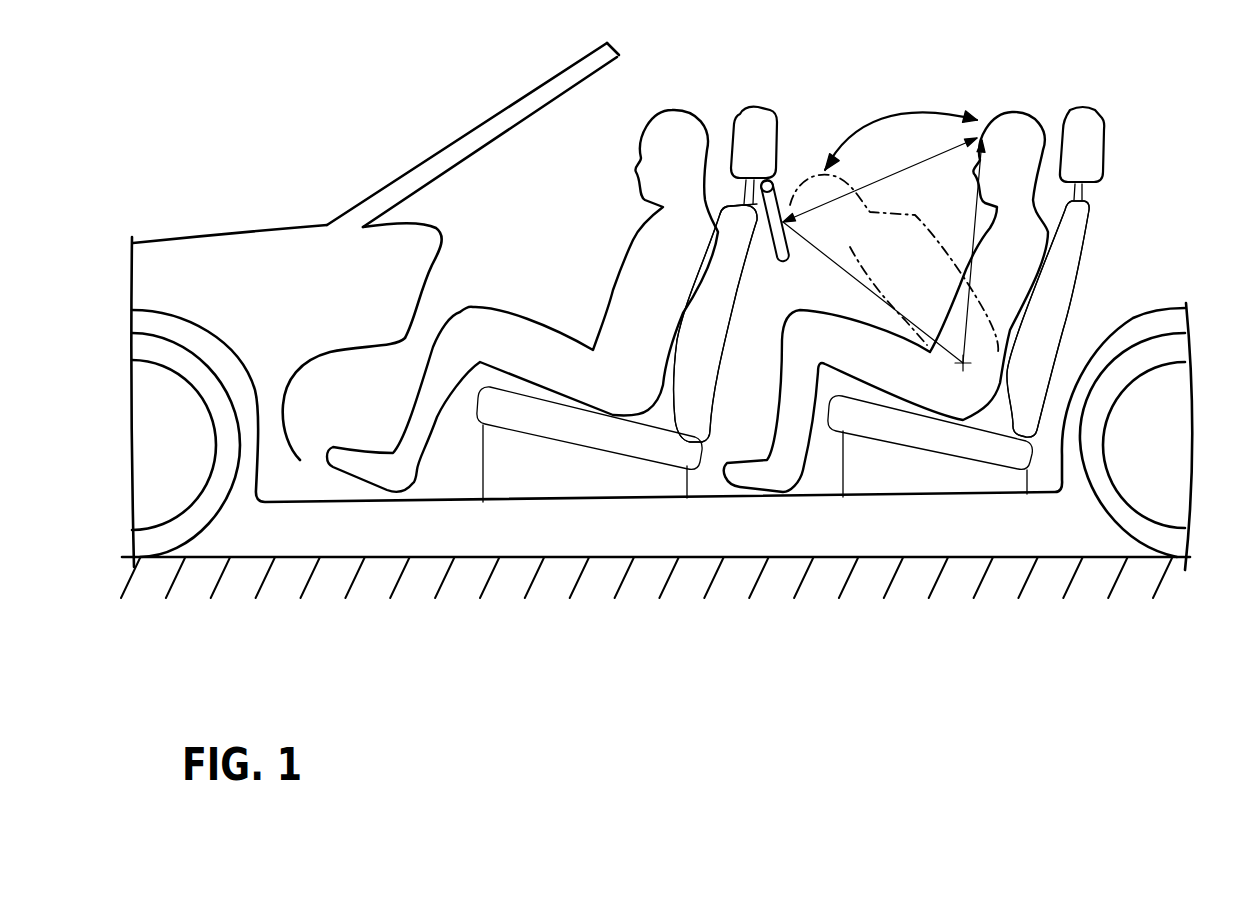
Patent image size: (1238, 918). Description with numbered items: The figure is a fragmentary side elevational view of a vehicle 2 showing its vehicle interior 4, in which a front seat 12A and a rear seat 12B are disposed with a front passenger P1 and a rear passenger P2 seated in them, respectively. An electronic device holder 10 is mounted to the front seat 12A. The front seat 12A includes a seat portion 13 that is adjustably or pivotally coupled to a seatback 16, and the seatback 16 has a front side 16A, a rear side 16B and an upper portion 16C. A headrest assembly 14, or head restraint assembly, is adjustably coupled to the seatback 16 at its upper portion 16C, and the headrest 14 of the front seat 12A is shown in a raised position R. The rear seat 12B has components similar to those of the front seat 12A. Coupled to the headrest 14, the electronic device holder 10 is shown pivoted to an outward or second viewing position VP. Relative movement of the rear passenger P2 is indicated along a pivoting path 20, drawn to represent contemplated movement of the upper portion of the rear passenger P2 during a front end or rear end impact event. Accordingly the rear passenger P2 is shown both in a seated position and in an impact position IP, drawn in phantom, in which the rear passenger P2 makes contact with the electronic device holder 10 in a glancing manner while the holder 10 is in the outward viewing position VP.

The vehicle 2 is at (450, 123).
The vehicle interior 4 is at (493, 220).
The front passenger P1 is at (637, 140).
The rear passenger P2 is at (1028, 105).
The electronic device holder 10 is at (884, 211).
The viewing position VP is at (788, 157).
The front seat 12A is at (655, 263).
The rear seat 12B is at (1080, 307).
The seat portion 13 is at (573, 433).
The headrest assembly 14 is at (946, 149).
The raised position R is at (753, 120).
The seatback 16 is at (720, 293).
The front side 16A is at (685, 338).
The rear side 16B is at (720, 373).
The upper portion 16C is at (722, 212).
The impact position IP is at (840, 183).
The pivoting path 20 is at (913, 108).